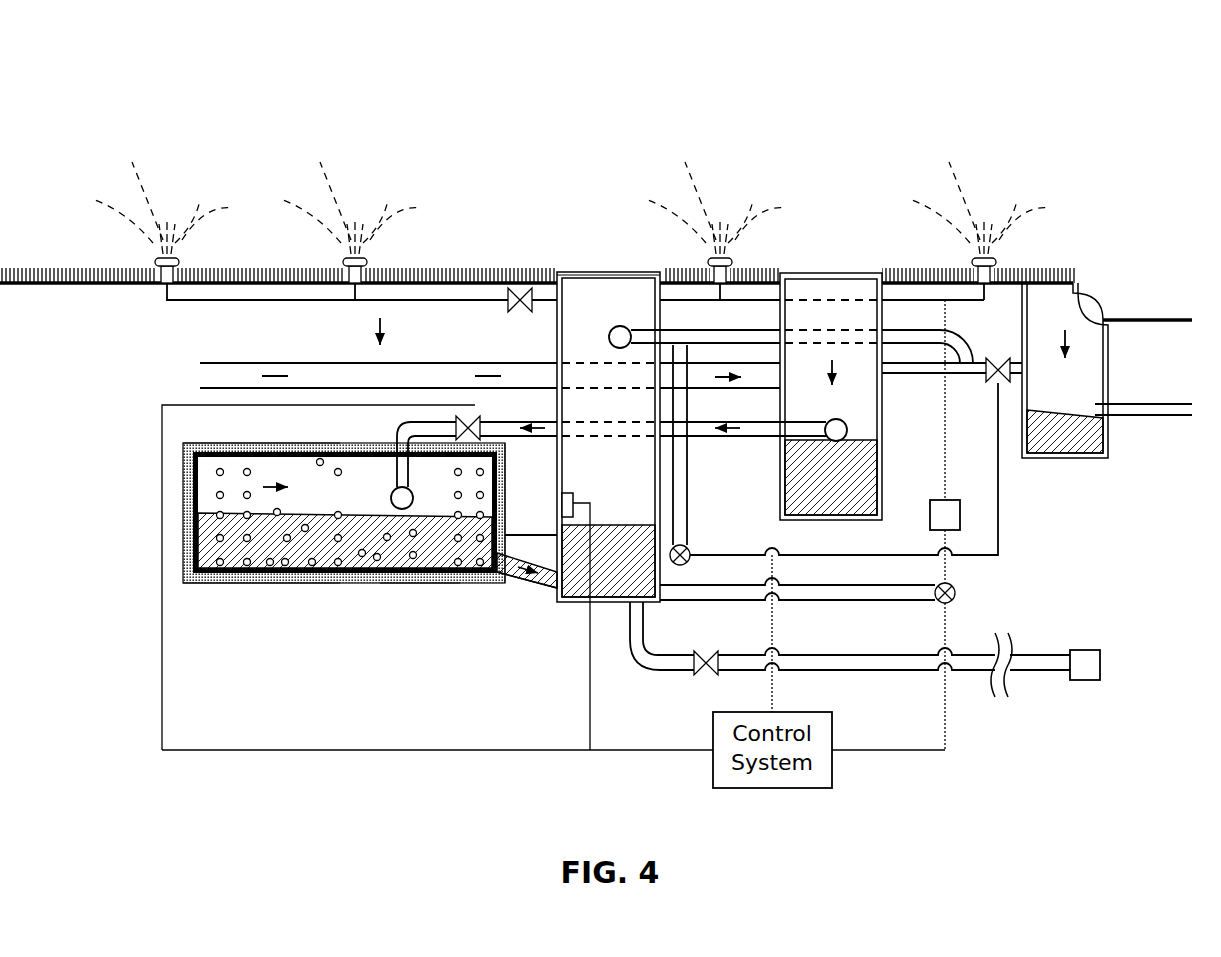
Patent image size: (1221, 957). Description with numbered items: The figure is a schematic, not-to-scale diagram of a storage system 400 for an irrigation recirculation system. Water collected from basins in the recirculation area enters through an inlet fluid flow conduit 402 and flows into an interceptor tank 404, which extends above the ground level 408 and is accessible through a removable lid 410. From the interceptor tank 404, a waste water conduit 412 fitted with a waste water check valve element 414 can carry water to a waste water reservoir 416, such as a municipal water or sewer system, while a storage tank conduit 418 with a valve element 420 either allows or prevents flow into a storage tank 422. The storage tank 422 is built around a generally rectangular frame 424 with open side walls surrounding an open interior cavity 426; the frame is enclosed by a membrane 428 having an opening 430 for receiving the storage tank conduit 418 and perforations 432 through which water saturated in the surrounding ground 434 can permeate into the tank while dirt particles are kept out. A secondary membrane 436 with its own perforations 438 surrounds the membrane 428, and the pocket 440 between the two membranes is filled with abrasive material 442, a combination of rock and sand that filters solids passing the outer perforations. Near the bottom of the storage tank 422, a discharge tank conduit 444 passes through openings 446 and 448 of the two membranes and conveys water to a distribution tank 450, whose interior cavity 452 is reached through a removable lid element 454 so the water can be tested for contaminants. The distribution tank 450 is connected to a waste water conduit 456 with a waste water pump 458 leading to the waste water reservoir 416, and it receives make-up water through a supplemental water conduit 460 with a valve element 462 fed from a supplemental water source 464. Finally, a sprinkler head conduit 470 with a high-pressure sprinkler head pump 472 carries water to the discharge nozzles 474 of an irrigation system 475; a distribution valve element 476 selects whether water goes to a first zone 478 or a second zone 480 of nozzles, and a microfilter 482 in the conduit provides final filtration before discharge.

The storage system 400 is at (897, 76).
The inlet fluid flow conduit 402 is at (421, 362).
The interceptor tank 404 is at (883, 441).
The ground level 408 is at (556, 268).
The removable lid 410 is at (600, 272).
The waste water conduit 412 is at (993, 382).
The waste water check valve element 414 is at (1005, 380).
The waste water reservoir 416 is at (1110, 447).
The storage tank conduit 418 is at (700, 438).
The valve element 420 is at (471, 418).
The storage tank 422 is at (251, 585).
The rectangular frame 424 is at (212, 452).
The interior cavity 426 is at (297, 452).
The membrane 428 is at (503, 498).
The opening 430 is at (391, 498).
The perforations 432 is at (387, 542).
The ground 434 is at (531, 523).
The secondary membrane 436 is at (333, 583).
The perforations 438 is at (212, 583).
The pocket 440 is at (298, 583).
The abrasive material 442 is at (421, 584).
The discharge tank conduit 444 is at (545, 588).
The opening 446 is at (570, 493).
The opening 448 is at (507, 582).
The distribution tank 450 is at (660, 580).
The interior cavity 452 is at (660, 497).
The lid element 454 is at (558, 272).
The waste water conduit 456 is at (703, 331).
The waste water pump 458 is at (700, 548).
The supplemental water conduit 460 is at (784, 672).
The valve element 462 is at (700, 676).
The supplemental water source 464 is at (1082, 650).
The sprinkler head conduit 470 is at (784, 600).
The sprinkler head pump 472 is at (956, 593).
The discharge nozzles 474 is at (181, 260).
The irrigation system 475 is at (730, 152).
The distribution valve element 476 is at (518, 284).
The first zone 478 is at (265, 152).
The second zone 480 is at (1003, 152).
The microfilter 482 is at (930, 517).